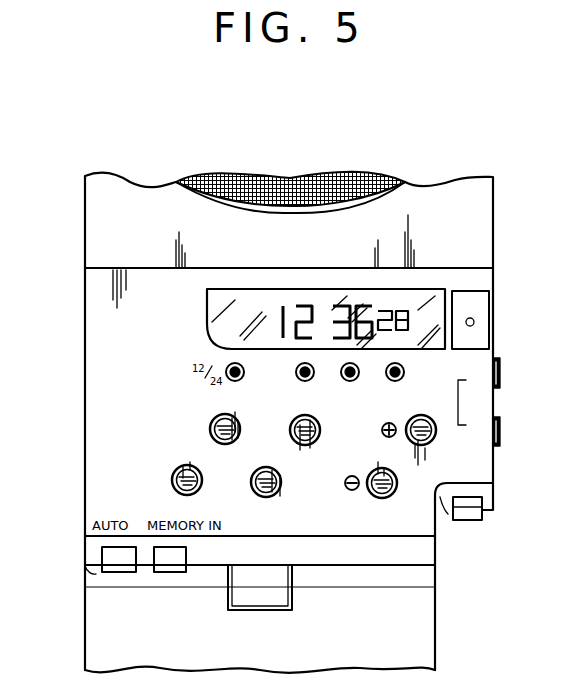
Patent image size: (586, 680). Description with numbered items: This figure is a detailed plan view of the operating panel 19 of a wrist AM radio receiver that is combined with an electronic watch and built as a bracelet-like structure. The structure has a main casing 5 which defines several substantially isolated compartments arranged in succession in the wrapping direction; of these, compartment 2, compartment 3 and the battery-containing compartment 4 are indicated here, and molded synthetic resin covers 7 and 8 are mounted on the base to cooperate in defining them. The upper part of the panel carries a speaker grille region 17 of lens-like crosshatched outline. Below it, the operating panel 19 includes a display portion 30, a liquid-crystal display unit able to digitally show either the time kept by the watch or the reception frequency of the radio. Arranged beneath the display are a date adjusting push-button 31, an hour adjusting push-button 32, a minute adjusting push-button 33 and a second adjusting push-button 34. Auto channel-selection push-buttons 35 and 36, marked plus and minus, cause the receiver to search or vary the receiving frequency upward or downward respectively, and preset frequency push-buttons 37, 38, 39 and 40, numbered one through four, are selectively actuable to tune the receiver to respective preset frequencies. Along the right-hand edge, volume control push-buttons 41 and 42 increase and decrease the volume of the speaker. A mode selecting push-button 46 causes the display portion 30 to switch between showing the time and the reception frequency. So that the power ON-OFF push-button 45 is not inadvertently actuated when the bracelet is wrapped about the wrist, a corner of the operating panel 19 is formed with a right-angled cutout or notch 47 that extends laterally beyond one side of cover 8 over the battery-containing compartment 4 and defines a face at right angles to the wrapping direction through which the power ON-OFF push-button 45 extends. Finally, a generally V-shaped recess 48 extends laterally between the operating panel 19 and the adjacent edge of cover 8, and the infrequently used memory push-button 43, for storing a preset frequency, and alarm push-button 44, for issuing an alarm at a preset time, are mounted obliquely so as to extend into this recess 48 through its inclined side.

The compartment 2 is at (131, 196).
The compartment 3 is at (92, 306).
The battery-containing compartment 4 is at (436, 606).
The main casing 5 is at (79, 187).
The cover 7 is at (491, 196).
The cover 8 is at (427, 646).
The speaker opening 17 is at (288, 172).
The operating panel 19 is at (90, 391).
The display portion 30 is at (311, 296).
The date adjusting push-button 31 is at (226, 366).
The hour adjusting push-button 32 is at (301, 380).
The minute adjusting push-button 33 is at (352, 383).
The second adjusting push-button 34 is at (404, 374).
The auto channel-selection push-button 35 is at (421, 446).
The auto channel-selection push-button 36 is at (383, 499).
The preset frequency push-button 37 is at (174, 470).
The preset frequency push-button 38 is at (213, 420).
The preset frequency push-button 39 is at (278, 490).
The preset frequency push-button 40 is at (305, 446).
The volume control push-button 41 is at (501, 370).
The volume control push-button 42 is at (501, 430).
The memory push-button 43 is at (172, 572).
The alarm push-button 44 is at (120, 572).
The power ON-OFF push-button 45 is at (478, 521).
The mode selecting push-button 46 is at (483, 316).
The right-angled cutout or notch 47 is at (442, 512).
The V-shaped recess 48 is at (92, 574).